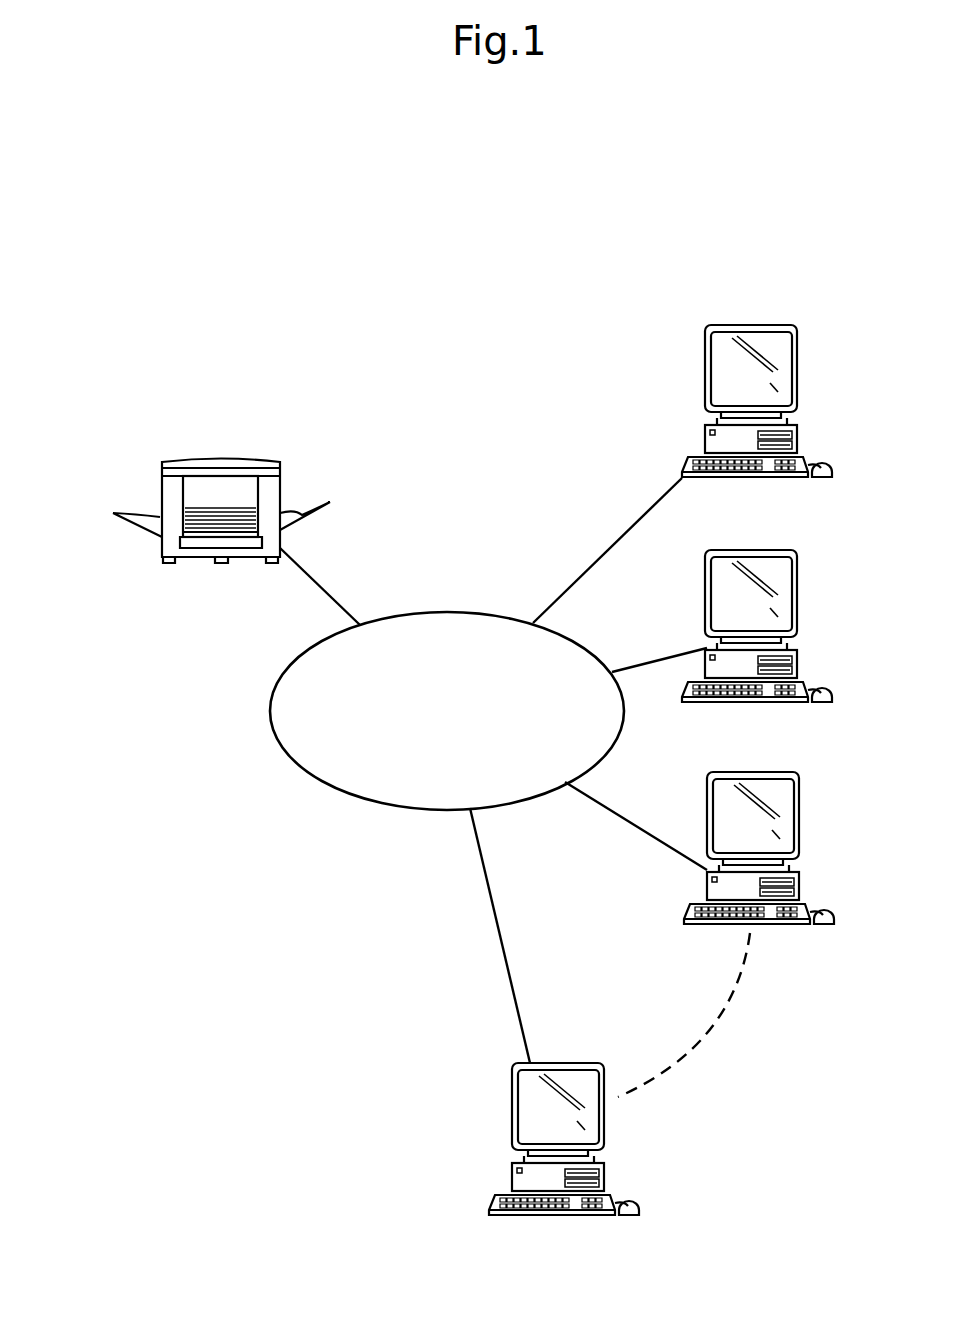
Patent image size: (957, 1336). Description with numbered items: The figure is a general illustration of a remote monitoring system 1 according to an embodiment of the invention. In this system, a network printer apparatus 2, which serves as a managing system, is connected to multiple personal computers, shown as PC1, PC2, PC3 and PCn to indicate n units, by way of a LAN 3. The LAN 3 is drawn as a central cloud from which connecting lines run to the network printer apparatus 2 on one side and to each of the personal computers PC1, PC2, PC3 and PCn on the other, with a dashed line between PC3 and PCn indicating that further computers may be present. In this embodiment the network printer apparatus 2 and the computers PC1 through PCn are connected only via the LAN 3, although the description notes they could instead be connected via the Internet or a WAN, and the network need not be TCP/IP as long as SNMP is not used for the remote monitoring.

The remote monitoring system 1 is at (498, 333).
The network printer apparatus 2 is at (282, 496).
The LAN 3 is at (285, 752).
The personal computer PC1 is at (778, 401).
The personal computer PC2 is at (778, 626).
The personal computer PC3 is at (780, 848).
The personal computer PCn is at (585, 1139).